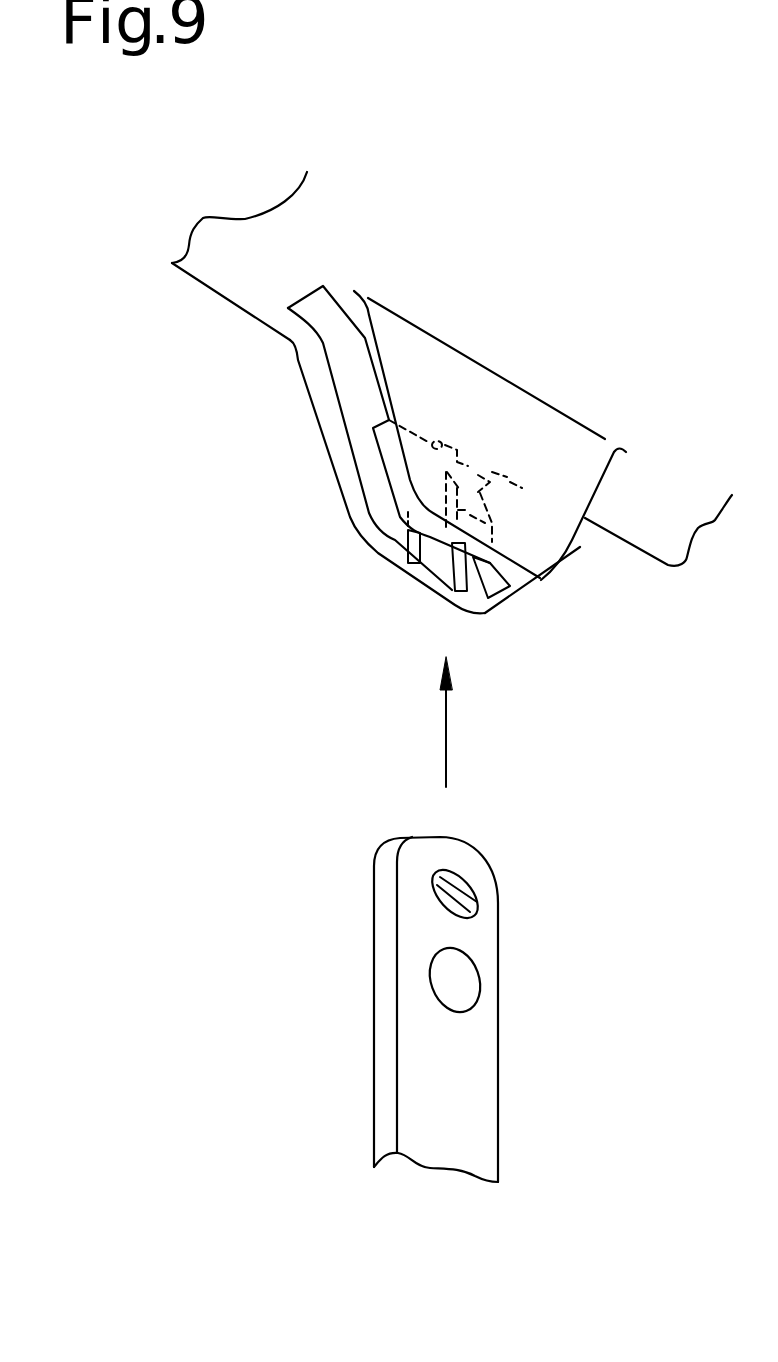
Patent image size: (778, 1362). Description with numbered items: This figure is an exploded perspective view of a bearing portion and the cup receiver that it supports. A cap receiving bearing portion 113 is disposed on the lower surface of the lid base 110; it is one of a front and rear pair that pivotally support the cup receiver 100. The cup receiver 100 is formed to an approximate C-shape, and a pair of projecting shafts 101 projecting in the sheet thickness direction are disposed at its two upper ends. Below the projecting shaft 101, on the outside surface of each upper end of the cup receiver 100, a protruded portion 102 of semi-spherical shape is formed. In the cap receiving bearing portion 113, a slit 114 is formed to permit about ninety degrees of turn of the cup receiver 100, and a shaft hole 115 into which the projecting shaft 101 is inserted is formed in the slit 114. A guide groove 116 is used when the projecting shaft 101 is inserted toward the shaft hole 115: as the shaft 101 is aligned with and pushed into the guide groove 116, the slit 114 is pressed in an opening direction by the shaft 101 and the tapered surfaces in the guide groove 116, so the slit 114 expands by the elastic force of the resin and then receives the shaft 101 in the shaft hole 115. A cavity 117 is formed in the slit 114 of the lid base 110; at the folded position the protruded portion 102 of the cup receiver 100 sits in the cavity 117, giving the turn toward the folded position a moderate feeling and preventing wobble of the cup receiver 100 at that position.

The cup receiver 100 is at (442, 1140).
The projecting shaft 101 is at (476, 880).
The protruded portion 102 is at (465, 988).
The lid base 110 is at (220, 232).
The cap receiving bearing portion 113 is at (548, 542).
The slit 114 is at (377, 493).
The shaft hole 115 is at (480, 457).
The guide groove 116 is at (437, 567).
The cavity 117 is at (377, 376).